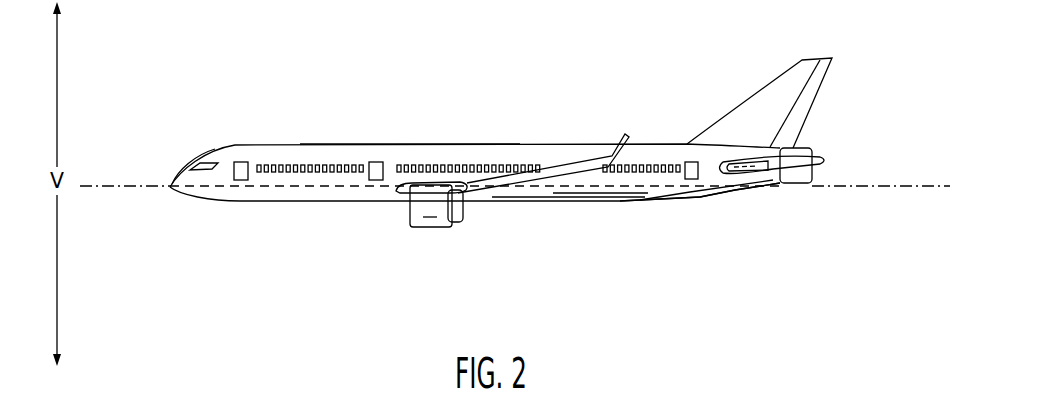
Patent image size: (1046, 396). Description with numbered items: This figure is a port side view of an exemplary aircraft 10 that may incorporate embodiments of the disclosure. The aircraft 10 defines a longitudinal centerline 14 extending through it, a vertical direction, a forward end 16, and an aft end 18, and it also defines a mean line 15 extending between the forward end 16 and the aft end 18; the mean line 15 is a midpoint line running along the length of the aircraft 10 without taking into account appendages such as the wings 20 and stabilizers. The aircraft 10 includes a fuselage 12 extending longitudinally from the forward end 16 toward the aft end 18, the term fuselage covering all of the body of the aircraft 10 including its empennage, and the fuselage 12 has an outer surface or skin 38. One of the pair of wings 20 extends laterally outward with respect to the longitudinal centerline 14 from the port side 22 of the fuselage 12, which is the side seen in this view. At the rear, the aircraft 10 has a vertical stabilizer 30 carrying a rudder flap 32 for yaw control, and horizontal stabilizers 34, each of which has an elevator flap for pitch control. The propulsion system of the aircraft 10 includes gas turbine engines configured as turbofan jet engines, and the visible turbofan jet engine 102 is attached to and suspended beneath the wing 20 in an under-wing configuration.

The aircraft 10 is at (215, 82).
The fuselage 12 is at (262, 200).
The longitudinal centerline 14 is at (92, 188).
The mean line 15 is at (662, 180).
The forward end 16 is at (175, 210).
The aft end 18 is at (748, 211).
The wings 20 is at (558, 166).
The port side 22 is at (610, 206).
The vertical stabilizer 30 is at (781, 90).
The rudder flap 32 is at (808, 88).
The horizontal stabilizers 34 is at (775, 182).
The outer surface or skin 38 is at (417, 132).
The turbofan jet engine 102 is at (411, 238).